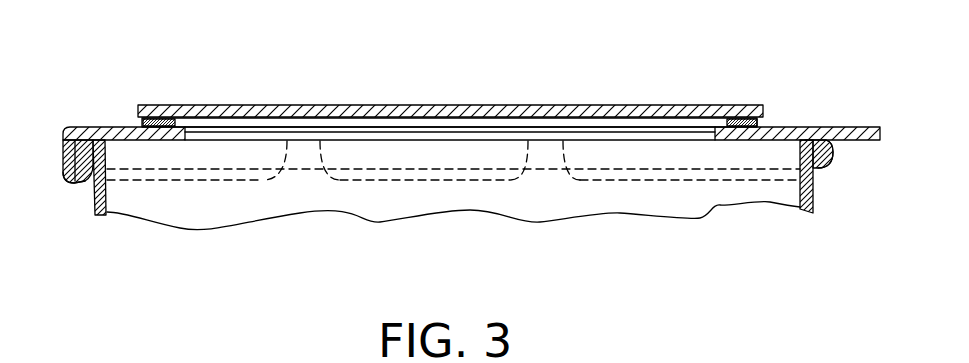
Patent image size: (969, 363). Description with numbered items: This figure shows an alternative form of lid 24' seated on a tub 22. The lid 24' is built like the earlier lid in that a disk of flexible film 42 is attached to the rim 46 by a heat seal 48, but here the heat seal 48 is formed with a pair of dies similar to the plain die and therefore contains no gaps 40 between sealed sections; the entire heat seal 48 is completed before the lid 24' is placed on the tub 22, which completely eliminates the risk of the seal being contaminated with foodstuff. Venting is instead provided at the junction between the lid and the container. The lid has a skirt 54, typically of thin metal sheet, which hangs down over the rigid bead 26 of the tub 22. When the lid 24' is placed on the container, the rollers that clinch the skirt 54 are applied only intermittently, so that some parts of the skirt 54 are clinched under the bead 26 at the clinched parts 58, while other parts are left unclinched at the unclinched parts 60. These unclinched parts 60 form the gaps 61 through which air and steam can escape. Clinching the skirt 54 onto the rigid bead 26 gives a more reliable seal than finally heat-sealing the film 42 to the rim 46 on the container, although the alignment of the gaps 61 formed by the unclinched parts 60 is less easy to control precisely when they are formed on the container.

The tub 22 is at (508, 207).
The alternative form of lid 24' is at (471, 212).
The bead 26 is at (66, 185).
The gaps 40 is at (302, 141).
The flexible film 42 is at (645, 106).
The rim 46 is at (802, 128).
The heat seal 48 is at (142, 124).
The skirt 54 is at (63, 138).
The clinched parts of the skirt 58 is at (413, 170).
The unclinched parts of the skirt 60 is at (851, 128).
The gaps 61 is at (833, 149).